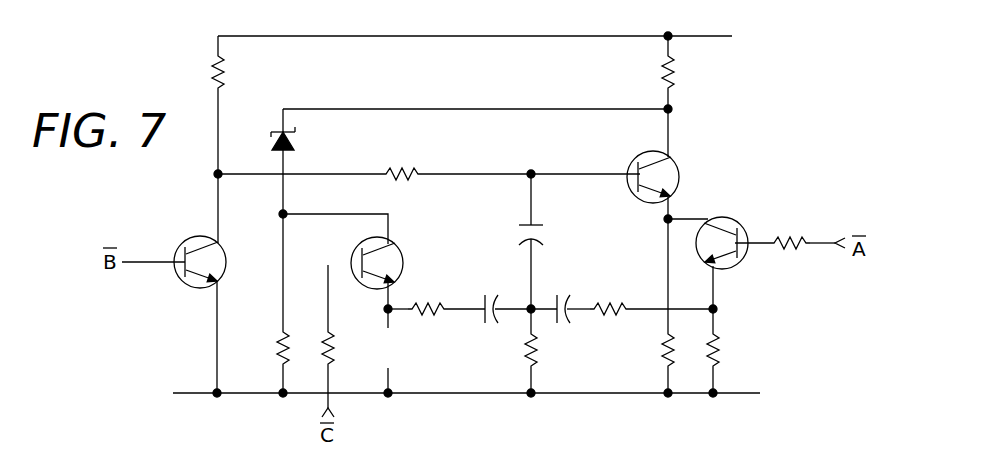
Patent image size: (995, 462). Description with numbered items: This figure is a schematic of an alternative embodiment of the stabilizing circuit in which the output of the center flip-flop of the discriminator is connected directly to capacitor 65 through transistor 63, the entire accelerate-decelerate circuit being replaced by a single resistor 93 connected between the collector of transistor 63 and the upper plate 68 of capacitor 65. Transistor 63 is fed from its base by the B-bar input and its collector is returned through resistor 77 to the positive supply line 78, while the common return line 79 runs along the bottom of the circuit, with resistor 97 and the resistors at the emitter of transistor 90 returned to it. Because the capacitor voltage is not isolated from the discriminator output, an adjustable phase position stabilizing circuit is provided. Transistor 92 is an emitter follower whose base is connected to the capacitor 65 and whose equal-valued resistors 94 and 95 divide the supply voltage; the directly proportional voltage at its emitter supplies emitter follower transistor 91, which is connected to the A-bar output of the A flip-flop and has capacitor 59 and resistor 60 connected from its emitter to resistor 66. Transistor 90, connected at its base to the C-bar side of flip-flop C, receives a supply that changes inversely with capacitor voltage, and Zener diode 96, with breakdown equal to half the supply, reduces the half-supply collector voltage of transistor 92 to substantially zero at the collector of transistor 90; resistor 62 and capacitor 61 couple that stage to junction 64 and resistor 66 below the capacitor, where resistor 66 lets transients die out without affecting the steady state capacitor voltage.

The resistor 77 is at (222, 62).
The positive supply conductor 78 is at (497, 38).
The resistor 94 is at (673, 80).
The Zener diode 96 is at (293, 138).
The resistor 93 is at (405, 172).
The upper plate 68 is at (528, 172).
The transistor 92 is at (628, 167).
The emitter follower transistor 91 is at (724, 268).
The transistor 63 is at (223, 276).
The transistor 90 is at (399, 254).
The capacitor 65 is at (540, 230).
The resistor 62 is at (437, 303).
The capacitor 61 is at (487, 294).
The capacitor 59 is at (569, 296).
The resistor 60 is at (614, 297).
The junction node 64 is at (535, 312).
The resistor 66 is at (526, 362).
The resistor 95 is at (646, 350).
The resistor 97 is at (280, 362).
The ground conductor 79 is at (568, 395).